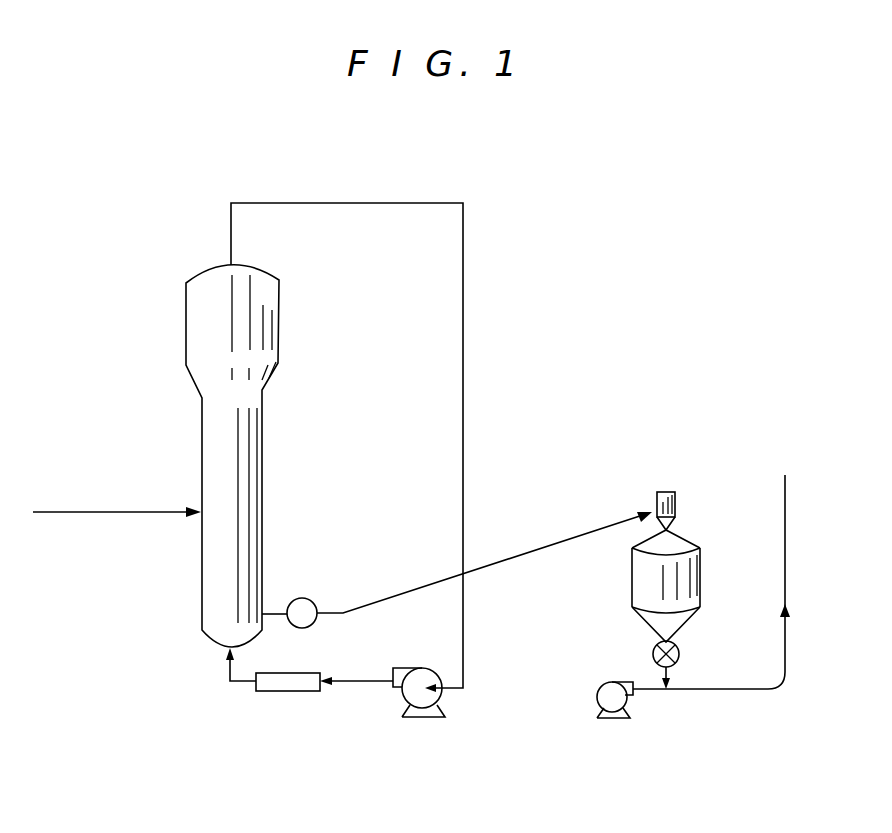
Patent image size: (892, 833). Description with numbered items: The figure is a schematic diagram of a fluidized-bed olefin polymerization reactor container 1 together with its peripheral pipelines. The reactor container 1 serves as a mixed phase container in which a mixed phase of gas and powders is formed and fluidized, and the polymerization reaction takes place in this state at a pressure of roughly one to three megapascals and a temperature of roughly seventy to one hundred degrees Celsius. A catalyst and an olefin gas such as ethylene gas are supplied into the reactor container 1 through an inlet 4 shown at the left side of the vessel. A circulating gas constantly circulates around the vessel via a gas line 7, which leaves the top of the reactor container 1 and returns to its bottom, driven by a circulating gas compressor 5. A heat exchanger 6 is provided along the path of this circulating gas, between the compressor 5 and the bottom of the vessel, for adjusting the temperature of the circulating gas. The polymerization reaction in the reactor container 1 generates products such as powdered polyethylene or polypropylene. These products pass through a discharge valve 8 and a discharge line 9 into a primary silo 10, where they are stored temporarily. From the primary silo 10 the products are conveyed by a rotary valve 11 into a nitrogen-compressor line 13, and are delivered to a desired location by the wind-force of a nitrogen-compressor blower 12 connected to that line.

The fluidized-bed olefin polymerization reactor container 1 is at (280, 290).
The inlet 4 is at (200, 512).
The circulating gas compressor 5 is at (402, 697).
The heat exchanger 6 is at (283, 692).
The gas line 7 is at (463, 362).
The discharge valve 8 is at (313, 598).
The discharge line 9 is at (508, 557).
The primary silo 10 is at (632, 586).
The rotary valve 11 is at (655, 657).
The nitrogen-compressor blower 12 is at (597, 693).
The nitrogen-compressor line 13 is at (785, 573).